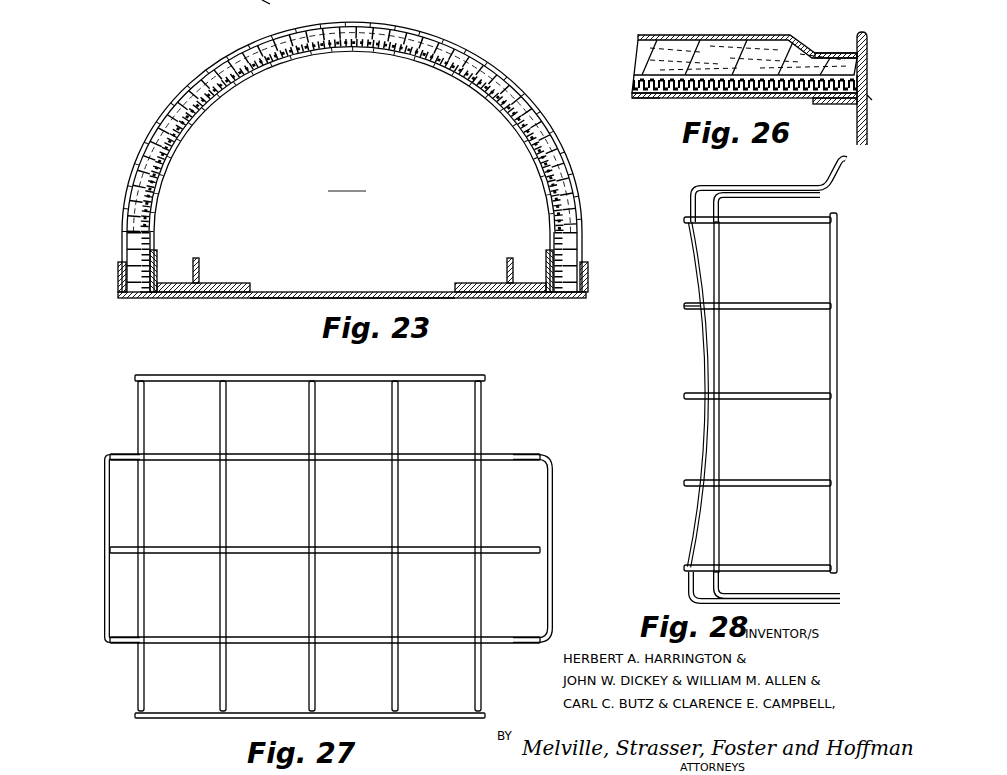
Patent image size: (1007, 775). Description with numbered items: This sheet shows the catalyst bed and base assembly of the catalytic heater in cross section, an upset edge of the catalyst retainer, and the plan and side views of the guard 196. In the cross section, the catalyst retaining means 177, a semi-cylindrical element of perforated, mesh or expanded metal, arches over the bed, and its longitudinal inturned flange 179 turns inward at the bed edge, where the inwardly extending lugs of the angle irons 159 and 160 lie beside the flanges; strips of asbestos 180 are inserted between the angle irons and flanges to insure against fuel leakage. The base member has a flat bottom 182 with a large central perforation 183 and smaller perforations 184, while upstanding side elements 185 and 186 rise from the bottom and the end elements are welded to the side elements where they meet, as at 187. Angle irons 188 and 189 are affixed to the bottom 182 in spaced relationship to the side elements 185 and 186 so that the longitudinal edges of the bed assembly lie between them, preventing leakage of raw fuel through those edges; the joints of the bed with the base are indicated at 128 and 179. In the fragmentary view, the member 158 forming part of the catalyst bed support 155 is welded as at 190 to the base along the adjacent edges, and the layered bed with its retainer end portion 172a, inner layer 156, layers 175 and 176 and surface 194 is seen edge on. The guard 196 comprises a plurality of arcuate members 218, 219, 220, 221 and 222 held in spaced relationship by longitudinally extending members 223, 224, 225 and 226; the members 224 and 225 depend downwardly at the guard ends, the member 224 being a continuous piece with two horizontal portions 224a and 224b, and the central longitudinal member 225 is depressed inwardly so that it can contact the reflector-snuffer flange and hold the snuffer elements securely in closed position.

In FIG. 23, the base joint 128 is at (150, 295).
In FIG. 26, the catalyst bed support 155 is at (655, 100).
In FIG. 23, the inner sheathing layer 156 is at (437, 70).
In FIG. 26, the inner sheathing layer 156 is at (748, 98).
In FIG. 26, the member 158 is at (838, 105).
In FIG. 23, the angle iron 159 is at (160, 263).
In FIG. 23, the angle iron 160 is at (545, 259).
In FIG. 26, the stepped sheathing portion 172a is at (836, 52).
In FIG. 23, the rubble insulation layer 175 is at (528, 112).
In FIG. 26, the rubble insulation layer 175 is at (646, 87).
In FIG. 23, the block insulation layer 176 is at (550, 166).
In FIG. 26, the block insulation layer 176 is at (646, 50).
In FIG. 23, the catalyst retaining means 177 is at (455, 50).
In FIG. 26, the catalyst retaining means 177 is at (706, 35).
In FIG. 23, the inturned flange 179 is at (536, 300).
In FIG. 23, the asbestos strip 180 is at (180, 300).
In FIG. 23, the flat bottom portion 182 is at (283, 292).
In FIG. 23, the central perforation 183 is at (345, 292).
In FIG. 23, the smaller perforations 184 is at (347, 182).
In FIG. 23, the upstanding side element 185 is at (120, 274).
In FIG. 23, the upstanding side element 186 is at (582, 282).
In FIG. 23, the weld 187 is at (266, 1).
In FIG. 23, the angle iron 188 is at (200, 263).
In FIG. 23, the angle iron 189 is at (505, 265).
In FIG. 26, the weld 190 is at (861, 33).
In FIG. 26, the post side 194 is at (871, 99).
In FIG. 27, the guard 196 is at (481, 420).
In FIG. 28, the guard 196 is at (690, 305).
In FIG. 27, the arcuate member 218 is at (145, 501).
In FIG. 28, the arcuate member 218 is at (755, 565).
In FIG. 27, the arcuate member 219 is at (227, 498).
In FIG. 28, the arcuate member 219 is at (755, 480).
In FIG. 27, the arcuate member 220 is at (316, 499).
In FIG. 28, the arcuate member 220 is at (758, 394).
In FIG. 27, the arcuate member 221 is at (399, 507).
In FIG. 28, the arcuate member 221 is at (760, 307).
In FIG. 27, the arcuate member 222 is at (482, 505).
In FIG. 28, the arcuate member 222 is at (768, 220).
In FIG. 27, the longitudinally extending member 223 is at (350, 712).
In FIG. 28, the longitudinally extending member 223 is at (838, 362).
In FIG. 27, the longitudinally extending member 224 is at (343, 452).
In FIG. 28, the longitudinally extending member 224 is at (719, 528).
In FIG. 27, the horizontal portion 224a is at (108, 530).
In FIG. 28, the horizontal portion 224a is at (842, 600).
In FIG. 27, the horizontal portion 224b is at (554, 526).
In FIG. 28, the horizontal portion 224b is at (843, 177).
In FIG. 27, the central longitudinal member 225 is at (340, 546).
In FIG. 28, the central longitudinal member 225 is at (700, 531).
In FIG. 27, the longitudinally extending member 226 is at (365, 378).